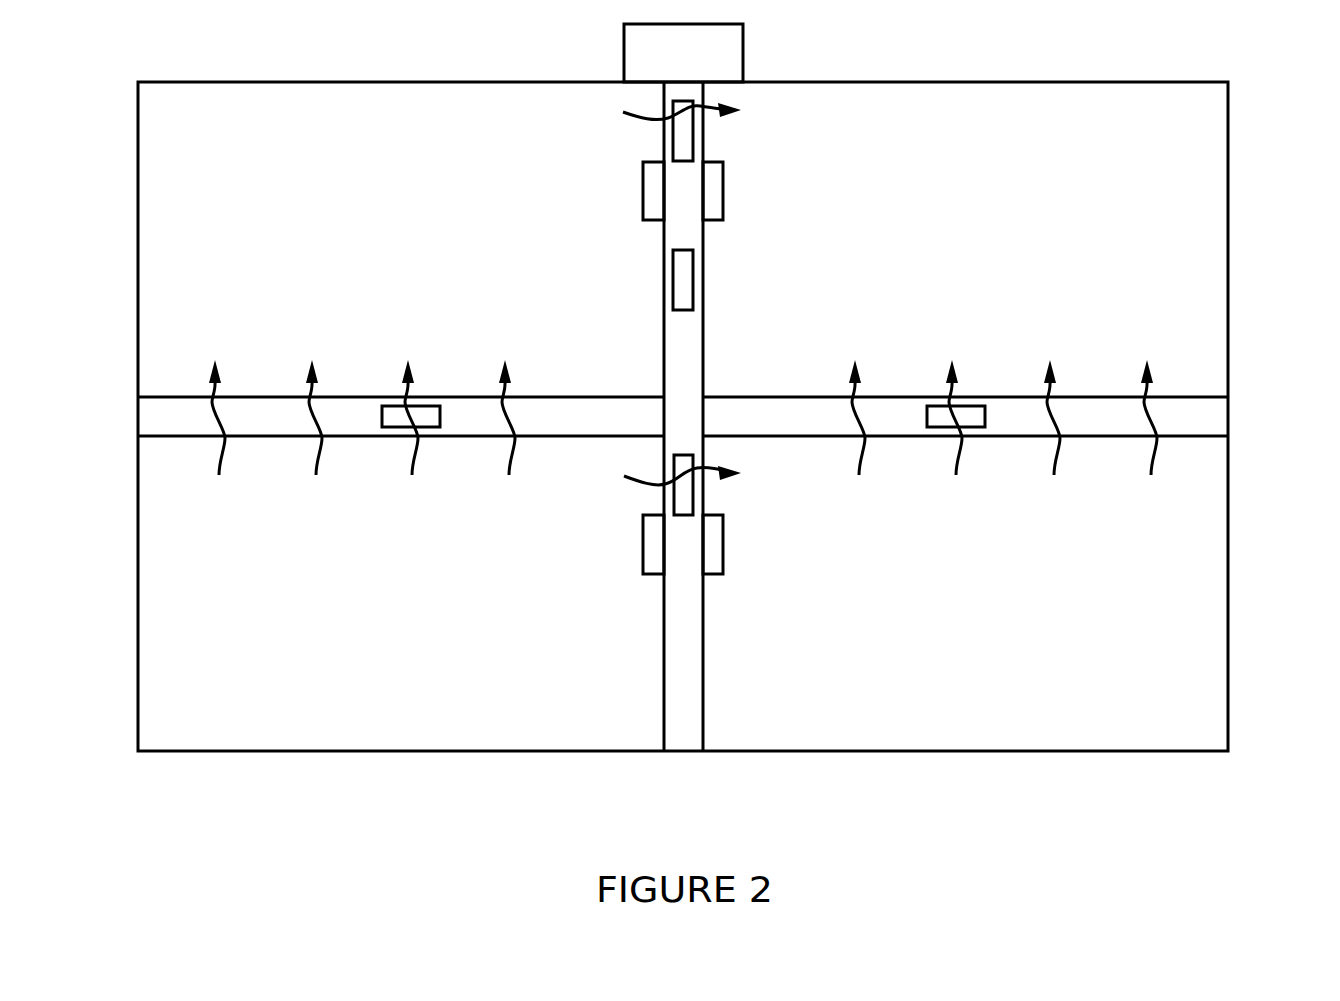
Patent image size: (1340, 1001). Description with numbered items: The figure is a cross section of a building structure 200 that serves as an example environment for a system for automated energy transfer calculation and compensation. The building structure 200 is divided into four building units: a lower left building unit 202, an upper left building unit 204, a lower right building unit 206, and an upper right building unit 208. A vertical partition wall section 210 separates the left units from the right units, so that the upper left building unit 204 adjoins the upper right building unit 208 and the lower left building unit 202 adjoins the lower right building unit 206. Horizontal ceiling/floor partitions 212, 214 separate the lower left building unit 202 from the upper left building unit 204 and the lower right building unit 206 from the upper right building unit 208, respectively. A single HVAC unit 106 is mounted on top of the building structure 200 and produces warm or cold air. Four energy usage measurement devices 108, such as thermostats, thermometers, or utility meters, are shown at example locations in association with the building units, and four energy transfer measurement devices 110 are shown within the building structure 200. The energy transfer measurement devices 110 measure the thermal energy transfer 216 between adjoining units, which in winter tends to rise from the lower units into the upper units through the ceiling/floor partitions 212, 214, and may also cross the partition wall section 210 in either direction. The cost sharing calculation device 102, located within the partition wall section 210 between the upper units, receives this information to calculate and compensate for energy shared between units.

The building structure 200 is at (138, 122).
The lower left building unit 202 is at (413, 585).
The upper left building unit 204 is at (413, 241).
The lower right building unit 206 is at (986, 585).
The upper right building unit 208 is at (986, 241).
The HVAC unit 106 is at (705, 64).
The energy usage measurement device 108 is at (644, 198).
The energy transfer measurement device 110 is at (683, 122).
The cost sharing calculation device 102 is at (683, 283).
The partition wall section 210 is at (685, 377).
The ceiling/floor partition 212 is at (152, 411).
The ceiling/floor partition 214 is at (1218, 406).
The thermal energy transfer 216 is at (724, 107).